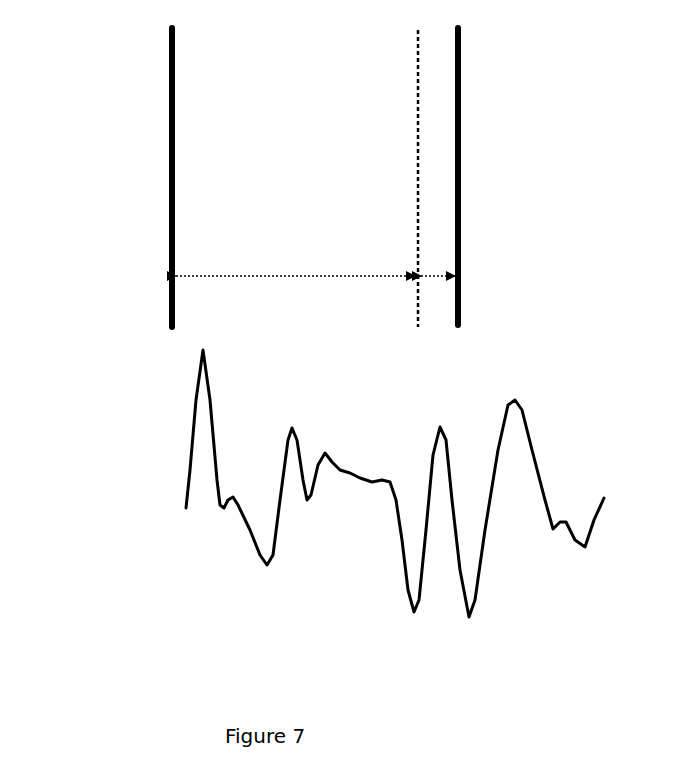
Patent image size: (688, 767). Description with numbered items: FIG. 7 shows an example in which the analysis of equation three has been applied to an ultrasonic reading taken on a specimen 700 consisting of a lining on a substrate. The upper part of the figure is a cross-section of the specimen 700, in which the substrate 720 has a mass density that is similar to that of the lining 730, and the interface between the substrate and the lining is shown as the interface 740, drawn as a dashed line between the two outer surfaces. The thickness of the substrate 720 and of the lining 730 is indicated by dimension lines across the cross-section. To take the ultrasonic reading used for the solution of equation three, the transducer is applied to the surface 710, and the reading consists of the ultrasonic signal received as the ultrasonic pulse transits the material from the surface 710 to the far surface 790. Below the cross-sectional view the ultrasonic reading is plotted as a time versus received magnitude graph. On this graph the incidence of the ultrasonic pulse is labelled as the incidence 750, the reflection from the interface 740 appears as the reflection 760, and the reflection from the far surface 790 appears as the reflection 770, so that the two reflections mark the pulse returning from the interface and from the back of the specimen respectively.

The specimen 700 is at (318, 177).
The surface 710 is at (166, 217).
The substrate 720 is at (312, 270).
The lining 730 is at (442, 285).
The interface 740 is at (413, 178).
The incidence of the ultrasonic pulse 750 is at (177, 503).
The reflection from the interface 760 is at (413, 560).
The reflection from the far surface 770 is at (469, 585).
The far surface 790 is at (464, 183).